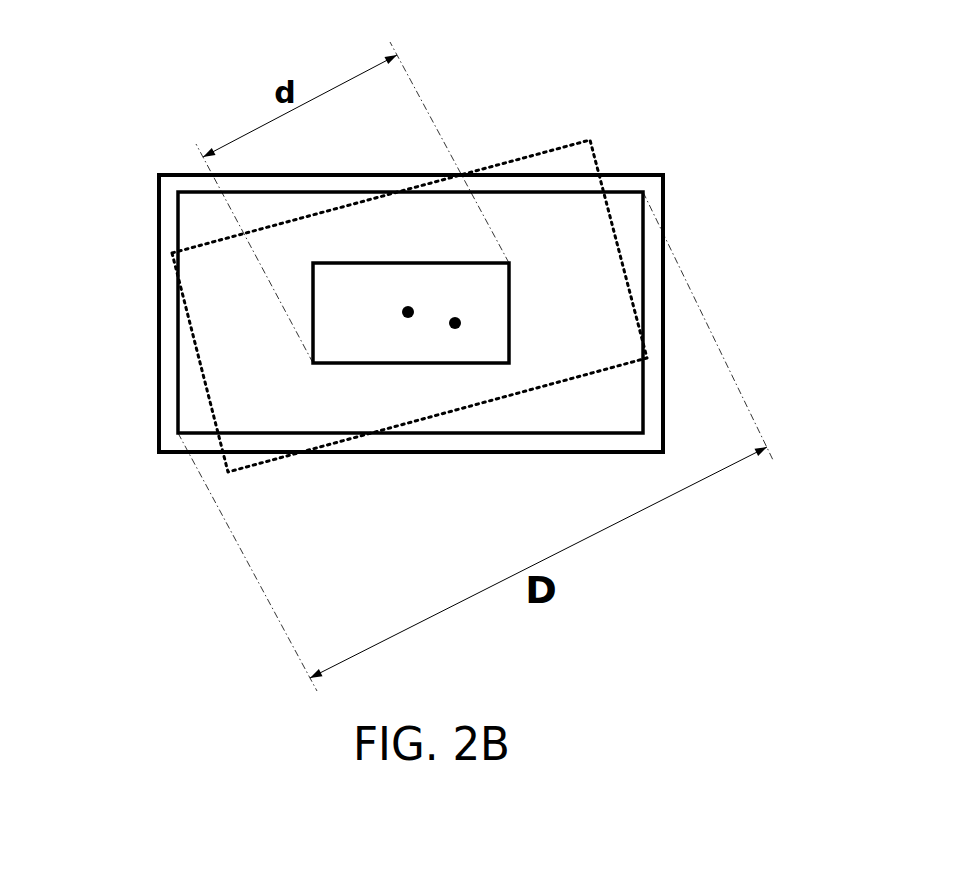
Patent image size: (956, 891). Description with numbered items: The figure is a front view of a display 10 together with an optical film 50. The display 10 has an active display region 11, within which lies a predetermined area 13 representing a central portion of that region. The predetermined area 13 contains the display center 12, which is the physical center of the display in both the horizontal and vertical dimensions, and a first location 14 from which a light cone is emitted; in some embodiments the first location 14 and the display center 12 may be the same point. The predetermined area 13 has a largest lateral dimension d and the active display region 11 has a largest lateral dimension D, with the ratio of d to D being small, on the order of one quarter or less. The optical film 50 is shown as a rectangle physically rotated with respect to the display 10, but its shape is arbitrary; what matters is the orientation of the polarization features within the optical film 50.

The display 10 is at (660, 130).
The active display region 11 is at (197, 220).
The display center 12 is at (402, 318).
The predetermined area 13 is at (332, 345).
The first location 14 is at (449, 328).
The optical film 50 is at (558, 148).